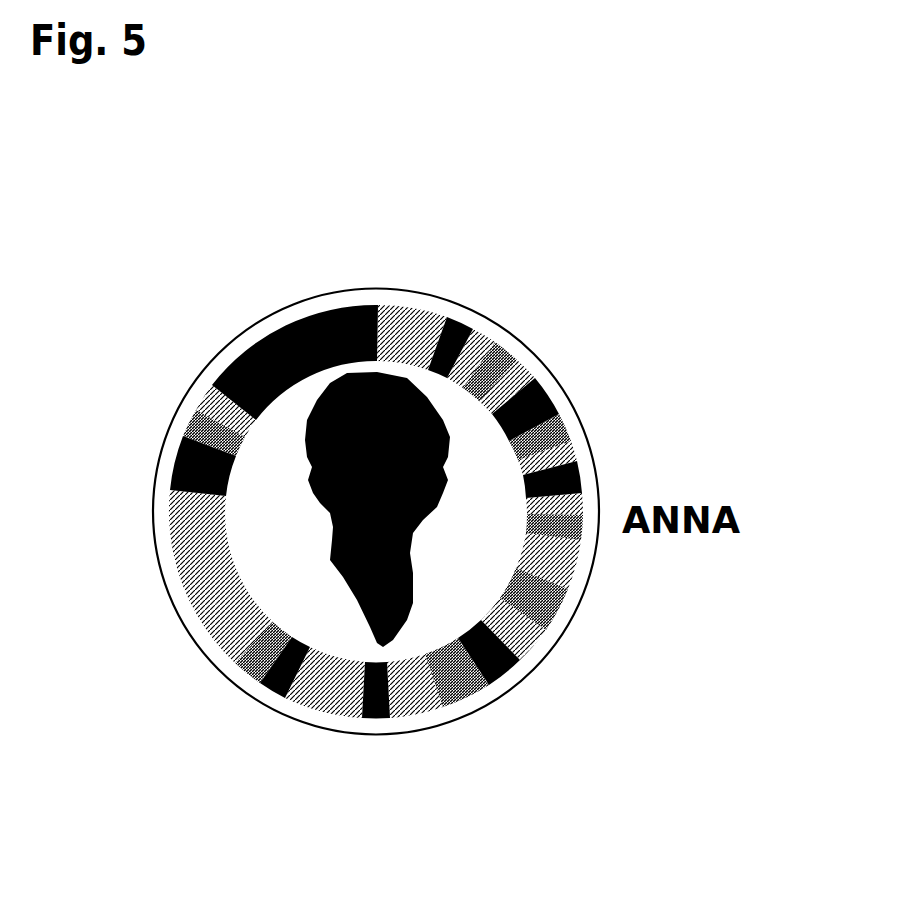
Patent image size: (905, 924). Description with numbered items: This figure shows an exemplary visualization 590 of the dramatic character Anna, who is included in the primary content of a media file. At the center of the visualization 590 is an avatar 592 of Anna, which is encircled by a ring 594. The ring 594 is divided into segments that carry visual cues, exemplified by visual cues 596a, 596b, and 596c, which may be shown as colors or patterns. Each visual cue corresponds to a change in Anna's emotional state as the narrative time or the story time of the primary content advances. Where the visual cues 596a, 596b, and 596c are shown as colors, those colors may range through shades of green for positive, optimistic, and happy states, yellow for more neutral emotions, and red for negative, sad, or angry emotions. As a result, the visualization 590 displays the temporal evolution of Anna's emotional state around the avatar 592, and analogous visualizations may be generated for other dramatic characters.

The visualization 590 is at (610, 278).
The avatar 592 is at (410, 498).
The ring 594 is at (228, 457).
The visual cue 596a is at (527, 627).
The visual cue 596b is at (373, 718).
The visual cue 596c is at (190, 433).